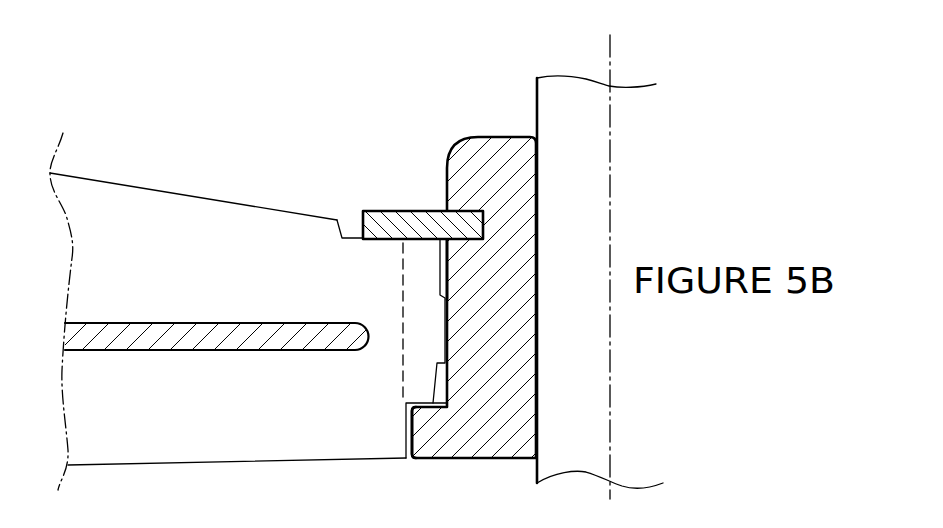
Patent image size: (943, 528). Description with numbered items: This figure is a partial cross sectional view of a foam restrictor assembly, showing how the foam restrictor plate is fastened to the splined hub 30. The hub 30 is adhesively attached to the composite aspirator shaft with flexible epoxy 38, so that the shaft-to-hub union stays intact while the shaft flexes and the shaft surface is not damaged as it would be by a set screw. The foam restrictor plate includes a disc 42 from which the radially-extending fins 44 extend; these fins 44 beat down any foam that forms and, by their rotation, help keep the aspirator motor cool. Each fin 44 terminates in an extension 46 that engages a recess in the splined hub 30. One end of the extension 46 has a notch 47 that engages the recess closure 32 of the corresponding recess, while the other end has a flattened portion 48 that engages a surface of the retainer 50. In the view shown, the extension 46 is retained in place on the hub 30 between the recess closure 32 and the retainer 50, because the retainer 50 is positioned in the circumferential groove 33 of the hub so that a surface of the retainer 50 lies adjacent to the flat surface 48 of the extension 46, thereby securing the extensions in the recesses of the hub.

The splined hub 30 is at (478, 119).
The recess closure 32 is at (413, 430).
The circumferential groove 33 is at (483, 223).
The flexible epoxy 38 is at (521, 137).
The disc 42 is at (180, 332).
The radially-extending fins 44 is at (108, 182).
The extension 46 is at (434, 307).
The notch 47 is at (404, 430).
The flattened portion 48 is at (353, 238).
The retainer 50 is at (403, 211).